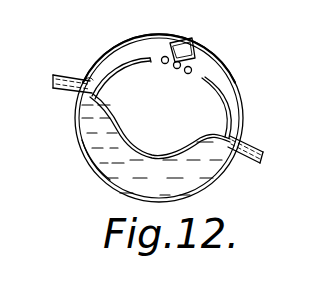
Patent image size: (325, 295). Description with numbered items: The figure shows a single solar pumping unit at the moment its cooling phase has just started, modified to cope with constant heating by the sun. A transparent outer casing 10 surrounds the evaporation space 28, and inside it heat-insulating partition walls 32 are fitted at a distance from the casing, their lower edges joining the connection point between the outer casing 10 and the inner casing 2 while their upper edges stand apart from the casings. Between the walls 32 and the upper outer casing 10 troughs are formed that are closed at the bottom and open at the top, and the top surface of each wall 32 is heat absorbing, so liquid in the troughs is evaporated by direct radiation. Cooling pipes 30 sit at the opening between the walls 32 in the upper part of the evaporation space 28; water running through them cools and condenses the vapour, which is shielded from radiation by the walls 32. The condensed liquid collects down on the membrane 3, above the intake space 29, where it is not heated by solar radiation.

The outer casing 10 is at (107, 50).
The casing 2 is at (82, 141).
The evaporation space 28 is at (150, 77).
The membrane 3 is at (125, 138).
The heat insulating partition wall 32 is at (222, 103).
The cooling pipe 30 is at (193, 70).
The intake space 29 is at (87, 129).